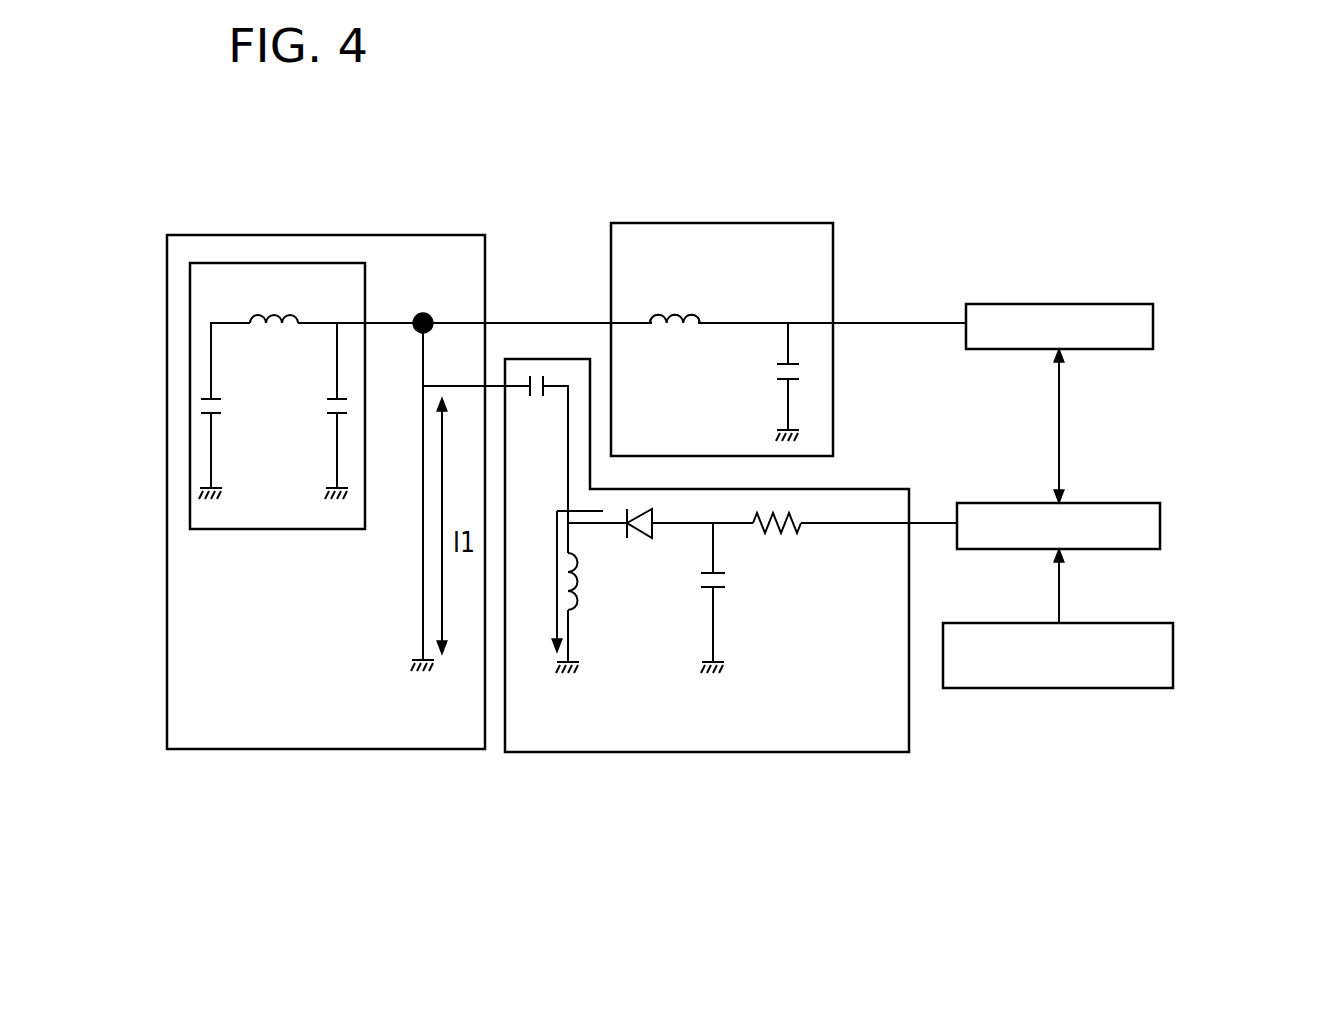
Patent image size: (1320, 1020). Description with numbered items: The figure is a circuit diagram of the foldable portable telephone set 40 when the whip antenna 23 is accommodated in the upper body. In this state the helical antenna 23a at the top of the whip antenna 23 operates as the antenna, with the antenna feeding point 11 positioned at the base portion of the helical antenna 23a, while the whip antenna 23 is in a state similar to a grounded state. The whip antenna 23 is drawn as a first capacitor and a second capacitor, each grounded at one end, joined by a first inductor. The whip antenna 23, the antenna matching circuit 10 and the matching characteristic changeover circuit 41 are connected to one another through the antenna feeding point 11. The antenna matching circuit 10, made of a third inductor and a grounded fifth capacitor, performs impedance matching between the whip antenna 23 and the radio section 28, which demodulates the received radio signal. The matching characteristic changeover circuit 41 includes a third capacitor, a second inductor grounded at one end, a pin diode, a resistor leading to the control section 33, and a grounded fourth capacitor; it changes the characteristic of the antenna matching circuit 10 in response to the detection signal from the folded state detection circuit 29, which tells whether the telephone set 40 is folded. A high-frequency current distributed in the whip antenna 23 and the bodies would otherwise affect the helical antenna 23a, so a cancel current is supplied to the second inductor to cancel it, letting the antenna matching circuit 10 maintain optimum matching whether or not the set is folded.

The foldable portable telephone set 40 is at (598, 125).
The antenna feeding point 11 is at (423, 313).
The antenna matching circuit 10 is at (718, 223).
The radio section 28 is at (1154, 330).
The control section 33 is at (1160, 530).
The folded state detection circuit 29 is at (1173, 657).
The whip antenna 23 is at (262, 749).
The helical antenna 23a is at (248, 530).
The matching characteristic changeover circuit 41 is at (630, 752).